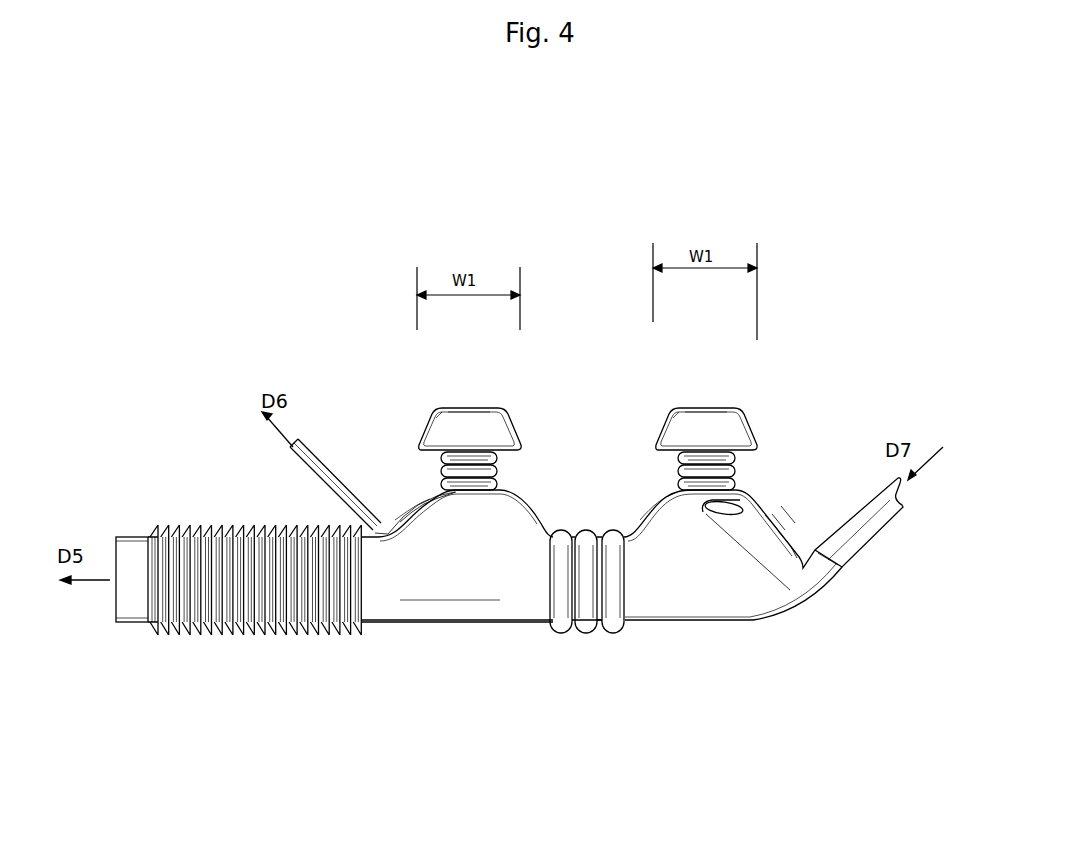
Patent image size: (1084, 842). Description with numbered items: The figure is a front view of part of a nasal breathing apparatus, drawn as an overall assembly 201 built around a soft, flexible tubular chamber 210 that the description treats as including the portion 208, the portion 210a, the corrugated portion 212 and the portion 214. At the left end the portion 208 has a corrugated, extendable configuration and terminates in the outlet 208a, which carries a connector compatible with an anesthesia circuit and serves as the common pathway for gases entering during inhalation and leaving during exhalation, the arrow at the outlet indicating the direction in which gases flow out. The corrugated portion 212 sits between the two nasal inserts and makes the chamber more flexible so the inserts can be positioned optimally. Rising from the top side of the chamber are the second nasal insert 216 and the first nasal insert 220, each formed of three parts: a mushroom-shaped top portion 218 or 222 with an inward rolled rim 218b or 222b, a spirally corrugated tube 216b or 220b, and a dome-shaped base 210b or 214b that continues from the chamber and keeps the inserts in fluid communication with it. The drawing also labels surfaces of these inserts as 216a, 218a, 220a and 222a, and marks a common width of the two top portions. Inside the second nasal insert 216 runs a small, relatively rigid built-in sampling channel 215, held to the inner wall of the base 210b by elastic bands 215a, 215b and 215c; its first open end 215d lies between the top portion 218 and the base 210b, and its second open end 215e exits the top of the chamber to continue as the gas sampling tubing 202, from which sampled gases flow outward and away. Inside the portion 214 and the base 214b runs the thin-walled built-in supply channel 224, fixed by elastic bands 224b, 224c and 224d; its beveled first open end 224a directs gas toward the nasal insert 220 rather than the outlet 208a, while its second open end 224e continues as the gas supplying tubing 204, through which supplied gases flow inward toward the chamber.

The hydraulic jack assembly body 201 is at (621, 595).
The gas sampling tubing 202 is at (318, 468).
The gas supplying tubing 204 is at (855, 528).
The portion of the tubular chamber 208 is at (270, 630).
The outlet 208a is at (131, 619).
The tubular chamber 210 is at (408, 612).
The portion of the tubular chamber 210a is at (458, 602).
The base 210b is at (438, 497).
The corrugated portion 212 is at (583, 634).
The portion of the tubular chamber 214 is at (685, 605).
The base 214b is at (668, 497).
The built-in tubing or channel 215 is at (440, 508).
The elastic band 215a is at (413, 514).
The elastic band 215b is at (416, 514).
The elastic band 215c is at (428, 508).
The first open end 215d is at (454, 494).
The second open end 215e is at (378, 527).
The second nasal insert 216 is at (487, 470).
The lower rib of first neck 216a is at (465, 485).
The tube 216b is at (440, 470).
The top portion 218 is at (468, 418).
The top surface of first head 218a is at (462, 412).
The inward rolled rim 218b is at (453, 413).
The first nasal insert 220 is at (697, 472).
The lower rib of second neck 220a is at (695, 486).
The tube 220b is at (732, 470).
The top portion 222 is at (712, 416).
The top surface of second head 222a is at (710, 415).
The inward rolled rim 222b is at (688, 412).
The built-in tubing or channel 224 is at (742, 537).
The first open end 224a is at (722, 510).
The elastic band 224b is at (772, 523).
The elastic band 224c is at (783, 538).
The elastic band 224d is at (785, 543).
The second open end 224e is at (833, 555).